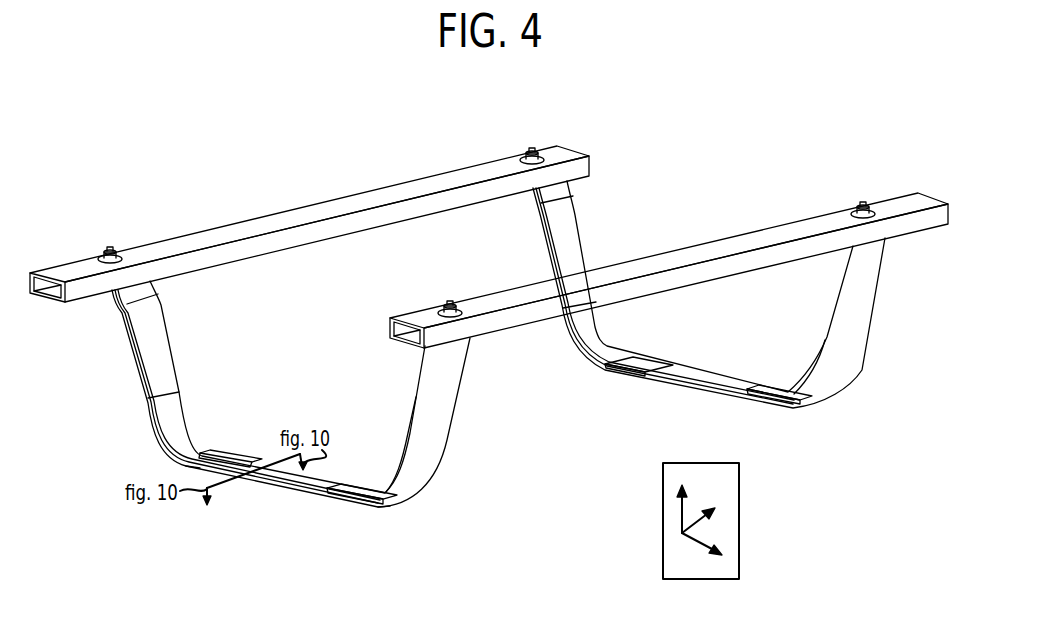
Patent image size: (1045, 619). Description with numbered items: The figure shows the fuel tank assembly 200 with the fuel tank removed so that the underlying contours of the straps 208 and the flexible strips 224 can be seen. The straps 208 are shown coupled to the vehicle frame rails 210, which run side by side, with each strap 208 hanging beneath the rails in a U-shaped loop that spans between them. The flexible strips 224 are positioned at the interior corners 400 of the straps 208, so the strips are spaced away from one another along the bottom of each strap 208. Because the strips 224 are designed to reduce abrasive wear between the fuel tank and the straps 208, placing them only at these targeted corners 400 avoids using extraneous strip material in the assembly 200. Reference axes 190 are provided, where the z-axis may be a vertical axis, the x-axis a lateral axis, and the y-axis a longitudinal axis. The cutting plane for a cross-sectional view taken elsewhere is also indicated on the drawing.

The fuel tank assembly 200 is at (924, 124).
The vehicle frame rails 210 is at (545, 128).
The straps 208 is at (481, 461).
The flexible strips 224 is at (177, 424).
The interior corners 400 is at (204, 445).
The reference axes 190 is at (662, 543).